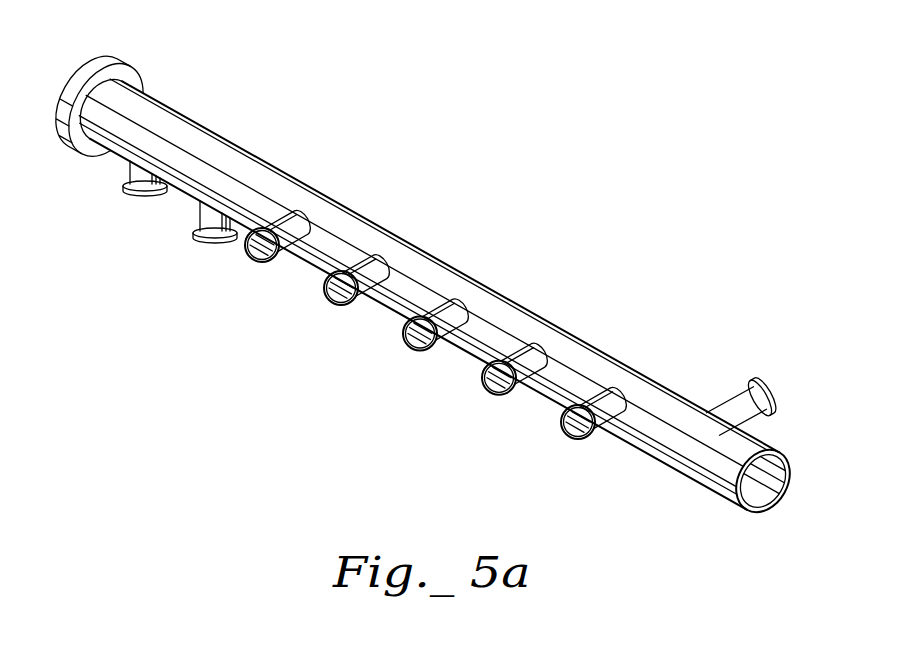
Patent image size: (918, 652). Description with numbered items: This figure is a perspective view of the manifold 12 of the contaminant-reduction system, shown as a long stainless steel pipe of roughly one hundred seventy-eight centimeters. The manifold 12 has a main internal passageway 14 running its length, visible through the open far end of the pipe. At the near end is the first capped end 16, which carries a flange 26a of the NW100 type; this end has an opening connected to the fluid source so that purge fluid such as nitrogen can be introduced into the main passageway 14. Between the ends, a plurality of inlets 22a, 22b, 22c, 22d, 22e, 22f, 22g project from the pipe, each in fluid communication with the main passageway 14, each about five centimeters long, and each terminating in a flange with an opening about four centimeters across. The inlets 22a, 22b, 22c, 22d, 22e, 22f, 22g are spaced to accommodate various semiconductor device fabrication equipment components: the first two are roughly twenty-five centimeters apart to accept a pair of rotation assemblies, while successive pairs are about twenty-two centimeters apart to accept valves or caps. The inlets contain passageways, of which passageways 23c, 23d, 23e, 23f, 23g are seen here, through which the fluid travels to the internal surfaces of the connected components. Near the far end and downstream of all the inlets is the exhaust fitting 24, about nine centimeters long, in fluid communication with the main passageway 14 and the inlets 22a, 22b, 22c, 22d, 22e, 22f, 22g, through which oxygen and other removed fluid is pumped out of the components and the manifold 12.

The manifold 12 is at (436, 229).
The main internal passageway 14 is at (765, 492).
The first capped end 16 is at (426, 274).
The inlet 22a is at (132, 196).
The inlet 22b is at (208, 243).
The inlet 22c is at (262, 263).
The inlet 22d is at (339, 306).
The inlet 22e is at (417, 351).
The inlet 22f is at (497, 396).
The inlet 22g is at (573, 441).
The passageway 23c is at (282, 222).
The passageway 23d is at (366, 264).
The passageway 23e is at (444, 308).
The passageway 23f is at (517, 352).
The passageway 23g is at (595, 403).
The exhaust fitting 24 is at (733, 400).
The flange 26a is at (102, 55).